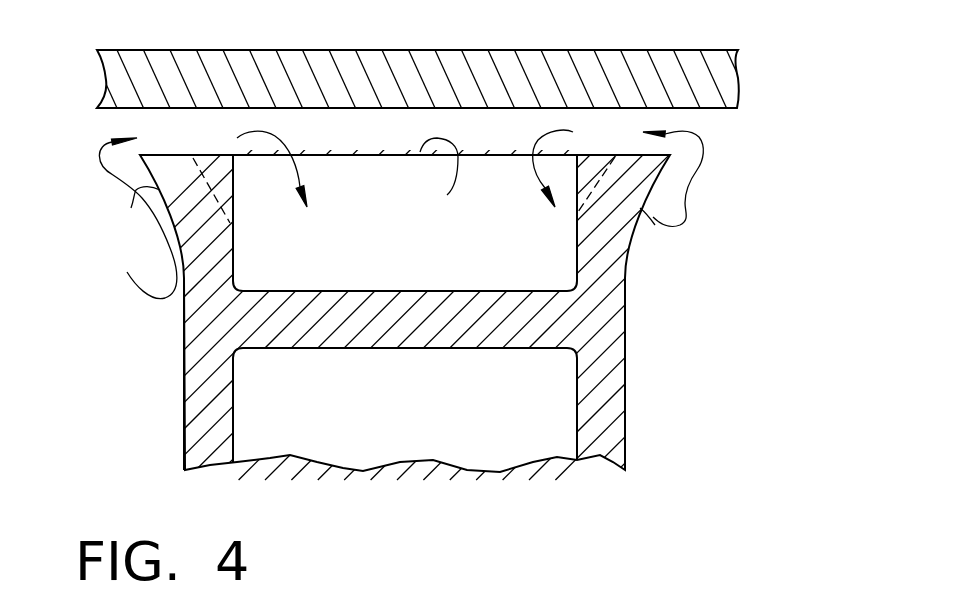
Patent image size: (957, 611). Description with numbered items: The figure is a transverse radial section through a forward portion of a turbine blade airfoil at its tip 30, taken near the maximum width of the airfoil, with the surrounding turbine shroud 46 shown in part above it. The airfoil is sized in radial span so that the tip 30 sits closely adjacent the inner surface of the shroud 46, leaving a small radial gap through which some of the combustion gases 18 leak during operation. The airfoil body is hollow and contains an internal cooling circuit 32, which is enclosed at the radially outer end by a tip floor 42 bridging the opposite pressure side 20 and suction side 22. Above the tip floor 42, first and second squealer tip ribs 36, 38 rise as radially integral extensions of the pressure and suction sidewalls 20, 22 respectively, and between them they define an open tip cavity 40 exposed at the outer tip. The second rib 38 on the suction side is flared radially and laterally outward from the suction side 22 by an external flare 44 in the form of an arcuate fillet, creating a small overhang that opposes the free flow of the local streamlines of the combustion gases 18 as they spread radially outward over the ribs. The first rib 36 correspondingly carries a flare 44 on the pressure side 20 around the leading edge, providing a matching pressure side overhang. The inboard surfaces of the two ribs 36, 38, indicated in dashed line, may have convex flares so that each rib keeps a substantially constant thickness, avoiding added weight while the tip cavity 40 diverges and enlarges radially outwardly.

The combustion gases 18 is at (150, 296).
The pressure side 20 is at (185, 422).
The suction side 22 is at (627, 388).
The tip 30 is at (434, 174).
The internal cooling circuit 32 is at (386, 407).
The first squealer tip rib 36 is at (235, 178).
The second squealer tip rib 38 is at (587, 207).
The tip cavity 40 is at (423, 266).
The tip floor 42 is at (285, 290).
The flare 44 is at (131, 208).
The turbine shroud 46 is at (740, 78).